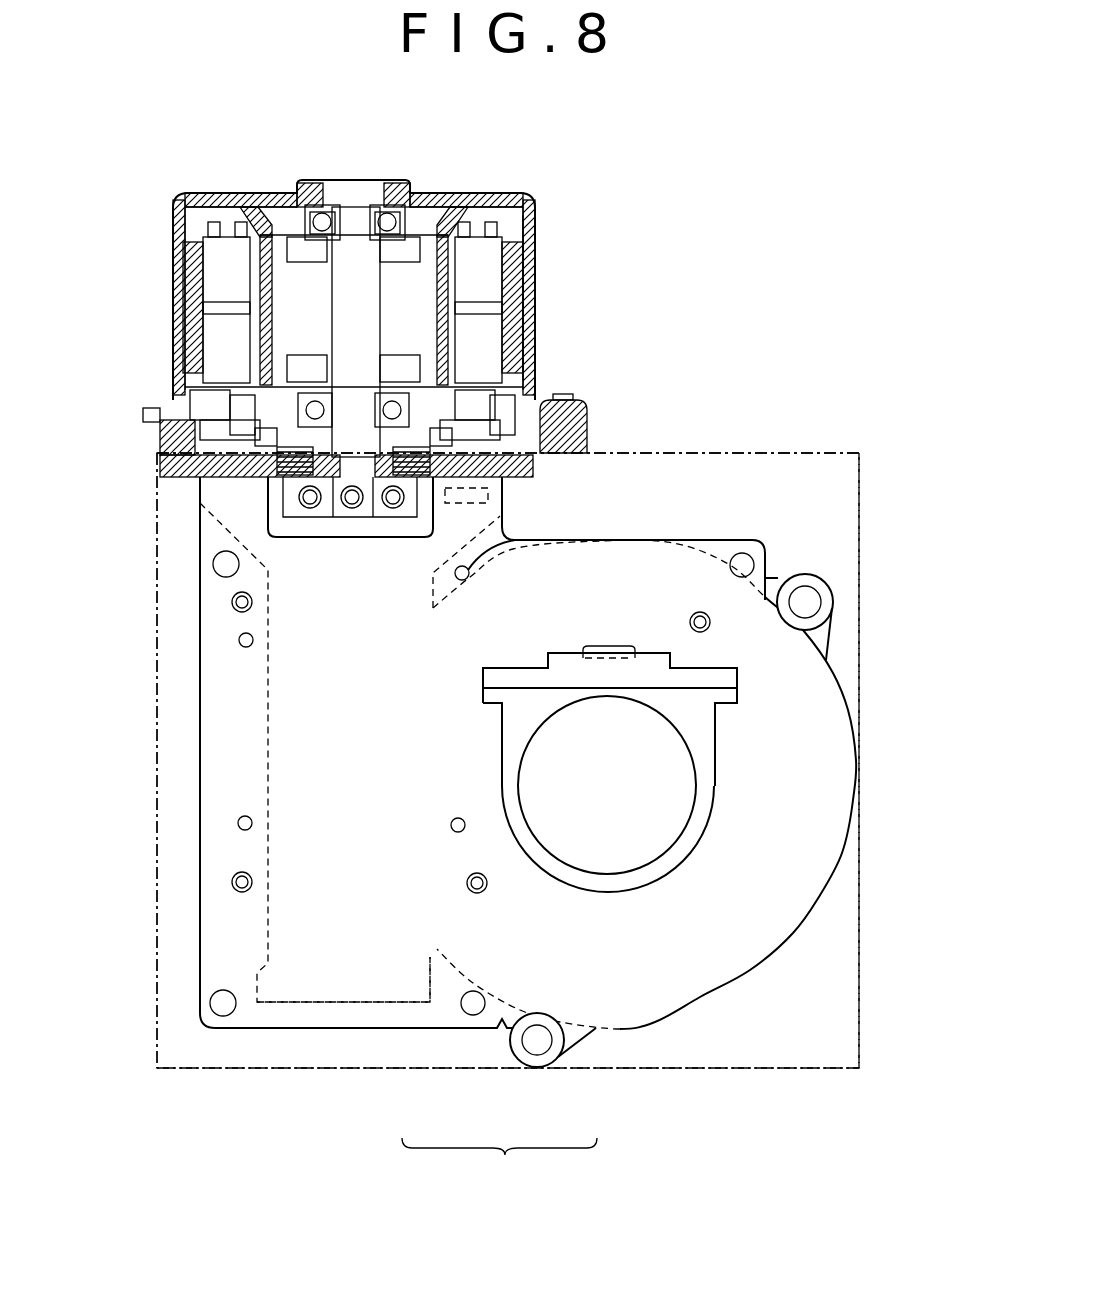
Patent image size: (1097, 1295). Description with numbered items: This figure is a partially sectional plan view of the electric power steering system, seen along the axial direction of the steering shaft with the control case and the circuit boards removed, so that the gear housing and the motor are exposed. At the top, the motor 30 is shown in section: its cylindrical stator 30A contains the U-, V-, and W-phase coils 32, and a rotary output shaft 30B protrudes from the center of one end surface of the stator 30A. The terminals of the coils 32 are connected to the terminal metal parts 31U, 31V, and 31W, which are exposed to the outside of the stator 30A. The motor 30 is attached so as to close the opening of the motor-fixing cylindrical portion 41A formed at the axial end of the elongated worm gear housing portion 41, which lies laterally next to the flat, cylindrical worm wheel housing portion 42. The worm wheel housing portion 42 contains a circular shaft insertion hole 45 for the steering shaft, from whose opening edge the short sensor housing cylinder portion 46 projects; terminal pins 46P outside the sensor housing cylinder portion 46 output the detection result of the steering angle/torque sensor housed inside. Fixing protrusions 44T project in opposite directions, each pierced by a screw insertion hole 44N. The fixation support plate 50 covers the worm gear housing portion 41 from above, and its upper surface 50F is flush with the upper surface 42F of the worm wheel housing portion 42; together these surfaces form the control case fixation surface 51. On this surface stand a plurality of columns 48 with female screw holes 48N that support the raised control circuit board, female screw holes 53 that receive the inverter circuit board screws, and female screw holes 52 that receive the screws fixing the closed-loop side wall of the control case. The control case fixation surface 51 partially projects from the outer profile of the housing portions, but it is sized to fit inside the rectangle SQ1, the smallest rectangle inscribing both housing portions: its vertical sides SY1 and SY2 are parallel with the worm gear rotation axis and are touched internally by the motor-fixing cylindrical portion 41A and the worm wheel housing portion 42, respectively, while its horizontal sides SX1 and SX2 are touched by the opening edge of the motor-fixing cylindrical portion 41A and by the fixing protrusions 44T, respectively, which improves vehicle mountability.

The motor 30 is at (476, 177).
The coils 32 is at (225, 276).
The stator 30A is at (508, 312).
The rotary output shaft 30B is at (235, 432).
The motor-fixing cylindrical portion 41A is at (163, 468).
The worm gear housing portion 41 is at (268, 748).
The worm wheel housing portion 42 is at (800, 950).
The upper surface of the worm wheel housing portion 42F is at (607, 997).
The screw insertion hole 44N is at (835, 588).
The fixing protrusions 44T is at (790, 577).
The circular shaft insertion hole 45 is at (683, 767).
The sensor housing cylinder portion 46 is at (682, 847).
The terminal pins 46P is at (613, 648).
The columns 48 is at (232, 602).
The female screw holes 48N is at (240, 608).
The fixation support plate 50 is at (330, 1030).
The upper surface of the fixation support plate 50F is at (412, 967).
The control case fixation surface 51 is at (499, 1162).
The female screw holes 52 is at (222, 558).
The female screw holes 53 is at (246, 648).
The terminal metal part 31U is at (315, 515).
The terminal metal part 31V is at (352, 515).
The terminal metal part 31W is at (392, 515).
The rectangle SQ1 is at (862, 486).
The horizontal side SX1 is at (690, 452).
The horizontal side SX2 is at (787, 1070).
The vertical side SY1 is at (157, 672).
The vertical side SY2 is at (862, 707).